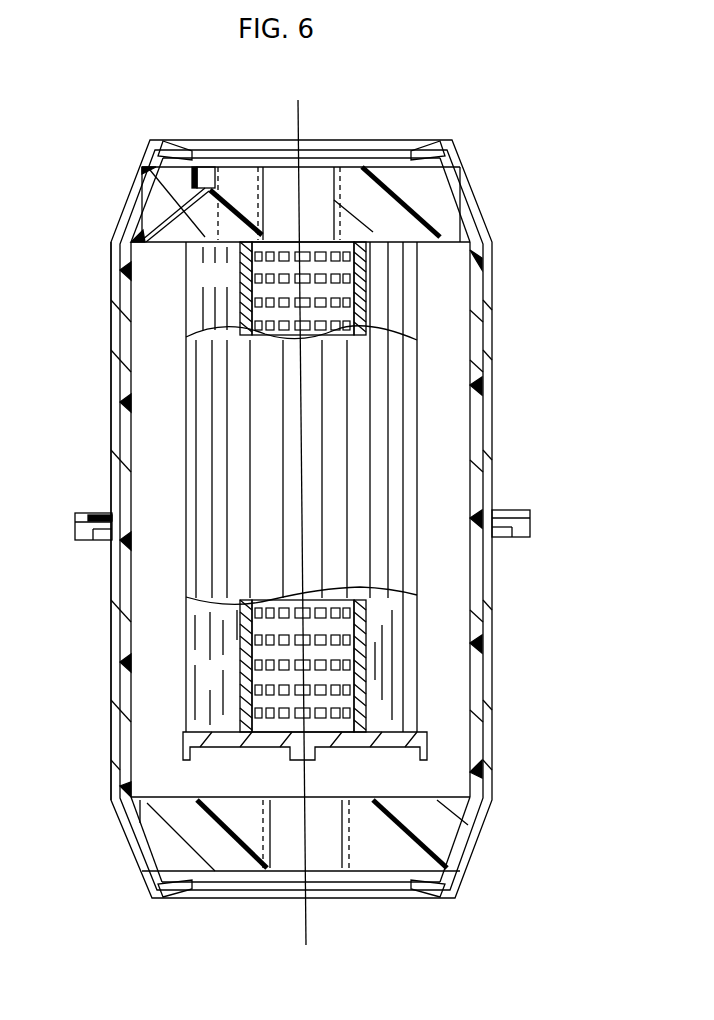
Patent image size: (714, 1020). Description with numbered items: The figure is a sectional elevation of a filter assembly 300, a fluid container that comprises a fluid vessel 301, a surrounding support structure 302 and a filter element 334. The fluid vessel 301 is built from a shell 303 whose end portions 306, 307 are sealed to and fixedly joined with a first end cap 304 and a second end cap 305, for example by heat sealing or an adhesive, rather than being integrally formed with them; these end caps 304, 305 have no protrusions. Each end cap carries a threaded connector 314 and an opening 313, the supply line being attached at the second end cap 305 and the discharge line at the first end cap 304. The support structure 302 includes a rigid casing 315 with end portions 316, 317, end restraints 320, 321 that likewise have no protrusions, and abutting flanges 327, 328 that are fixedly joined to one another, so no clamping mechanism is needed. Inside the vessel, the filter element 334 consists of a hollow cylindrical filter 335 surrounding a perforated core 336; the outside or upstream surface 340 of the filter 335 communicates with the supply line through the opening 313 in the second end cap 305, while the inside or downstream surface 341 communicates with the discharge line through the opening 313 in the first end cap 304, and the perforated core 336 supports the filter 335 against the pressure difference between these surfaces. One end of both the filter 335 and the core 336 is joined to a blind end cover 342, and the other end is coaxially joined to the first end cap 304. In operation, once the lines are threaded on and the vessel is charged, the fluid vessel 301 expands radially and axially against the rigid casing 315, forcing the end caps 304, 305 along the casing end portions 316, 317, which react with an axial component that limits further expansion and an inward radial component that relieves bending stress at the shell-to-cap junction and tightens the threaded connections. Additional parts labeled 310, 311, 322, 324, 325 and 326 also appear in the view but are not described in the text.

The filter assembly 300 is at (530, 68).
The fluid vessel 301 is at (494, 381).
The support structure 302 is at (499, 455).
The shell 303 is at (470, 445).
The first end cap 304 is at (404, 183).
The second end cap 305 is at (413, 862).
The end portion 306 is at (470, 200).
The end portion 307 is at (466, 838).
The gap 310 is at (458, 248).
The end cap 311 is at (167, 157).
The opening 313 is at (323, 178).
The threaded connector 314 is at (245, 168).
The rigid casing 315 is at (113, 412).
The end portion 316 is at (128, 192).
The end portion 317 is at (137, 857).
The end restraint 320 is at (285, 302).
The end restraint 321 is at (288, 892).
The brace 322 is at (428, 175).
The support member 324 is at (365, 170).
The upper side wall portion 325 is at (120, 270).
The lower side wall portion 326 is at (120, 672).
The abutting flange 327 is at (86, 510).
The abutting flange 328 is at (88, 538).
The filter element 334 is at (427, 552).
The filter 335 is at (190, 432).
The perforated core 336 is at (238, 296).
The upstream surface 340 is at (178, 248).
The downstream surface 341 is at (208, 165).
The blind end cover 342 is at (262, 750).